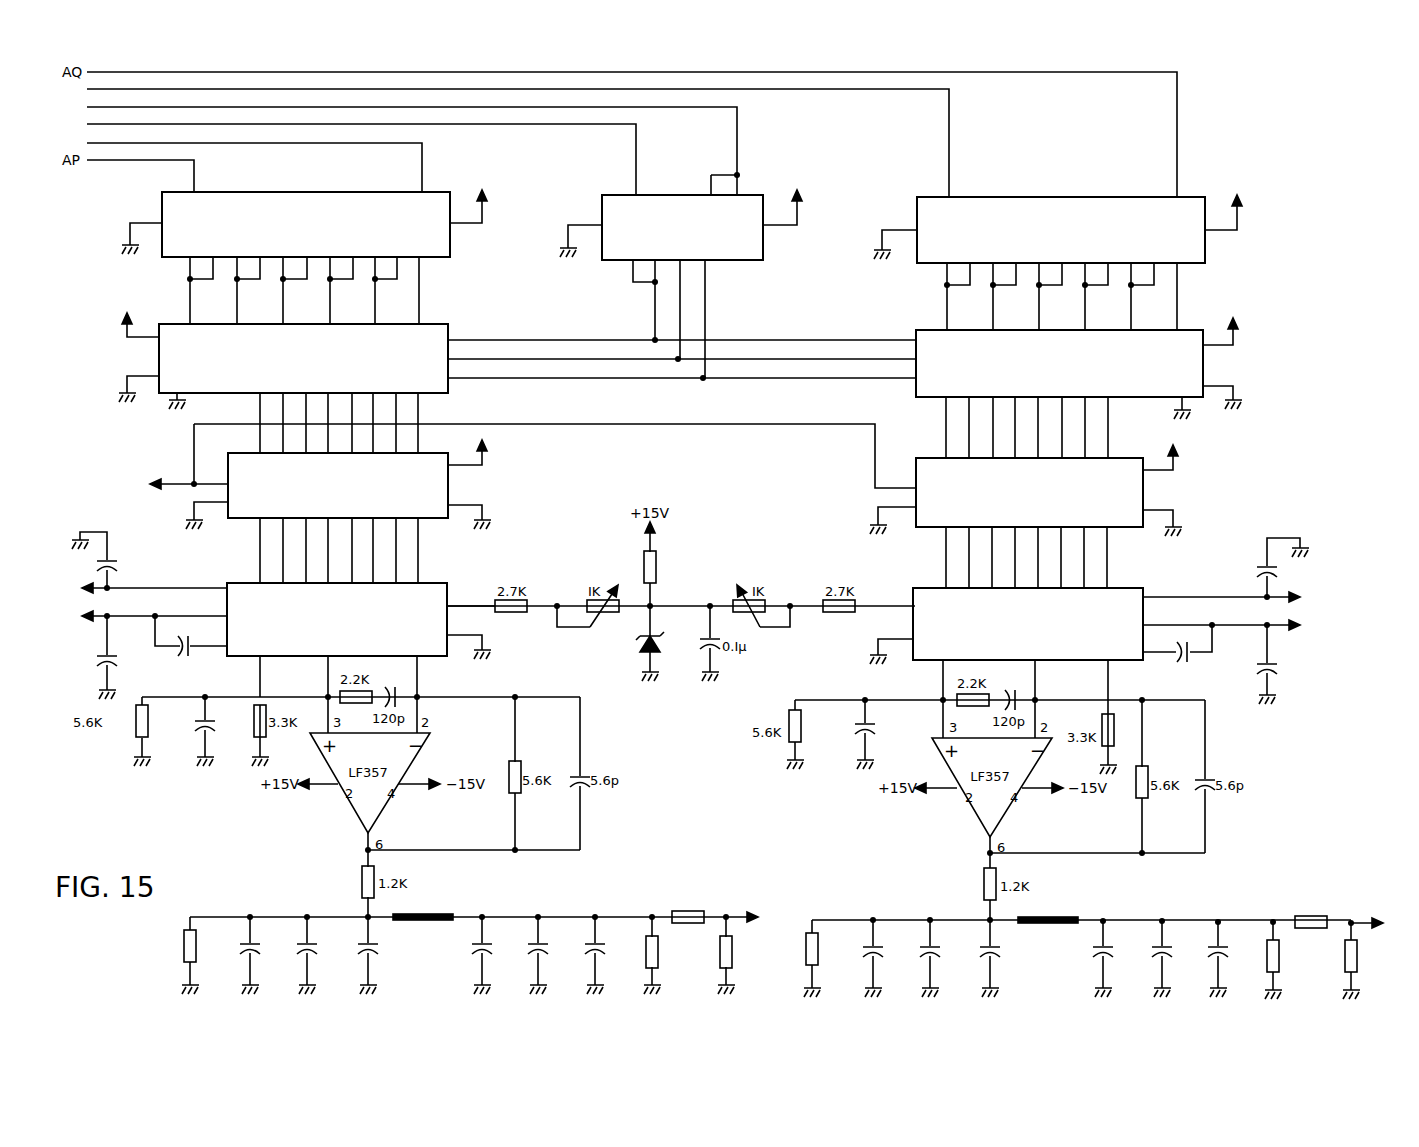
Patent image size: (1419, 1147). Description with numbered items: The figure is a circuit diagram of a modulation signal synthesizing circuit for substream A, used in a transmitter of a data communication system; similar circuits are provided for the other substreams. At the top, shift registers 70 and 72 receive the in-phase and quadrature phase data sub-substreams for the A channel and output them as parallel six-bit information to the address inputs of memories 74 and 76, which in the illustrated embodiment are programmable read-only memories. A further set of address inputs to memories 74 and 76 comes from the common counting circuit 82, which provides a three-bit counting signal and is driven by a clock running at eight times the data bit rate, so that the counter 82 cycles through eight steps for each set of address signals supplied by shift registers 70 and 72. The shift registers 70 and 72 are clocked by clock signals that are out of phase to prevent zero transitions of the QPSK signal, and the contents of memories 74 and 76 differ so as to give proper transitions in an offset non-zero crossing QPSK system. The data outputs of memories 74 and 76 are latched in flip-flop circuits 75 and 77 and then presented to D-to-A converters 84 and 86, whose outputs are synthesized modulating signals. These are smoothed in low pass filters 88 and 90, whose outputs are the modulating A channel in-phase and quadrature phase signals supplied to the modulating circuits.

The shift register 70 is at (307, 192).
The shift register 72 is at (1020, 197).
The memory 74 is at (443, 324).
The flip-flop circuit 75 is at (448, 480).
The memory 76 is at (920, 329).
The flip-flop circuit 77 is at (1143, 483).
The common counting circuit 82 is at (610, 193).
The D-to-A converter 84 is at (441, 583).
The D-to-A converter 86 is at (923, 587).
The low pass filter 88 is at (566, 905).
The low pass filter 90 is at (1124, 913).